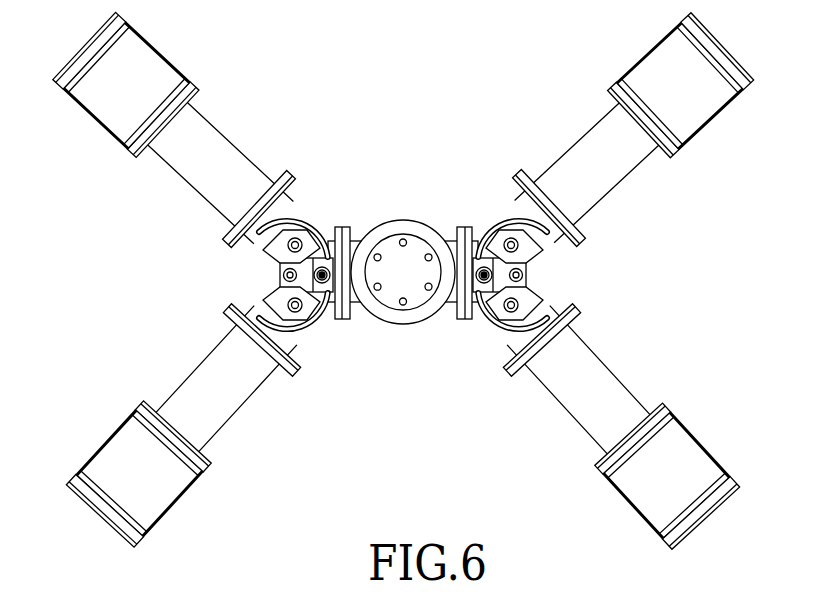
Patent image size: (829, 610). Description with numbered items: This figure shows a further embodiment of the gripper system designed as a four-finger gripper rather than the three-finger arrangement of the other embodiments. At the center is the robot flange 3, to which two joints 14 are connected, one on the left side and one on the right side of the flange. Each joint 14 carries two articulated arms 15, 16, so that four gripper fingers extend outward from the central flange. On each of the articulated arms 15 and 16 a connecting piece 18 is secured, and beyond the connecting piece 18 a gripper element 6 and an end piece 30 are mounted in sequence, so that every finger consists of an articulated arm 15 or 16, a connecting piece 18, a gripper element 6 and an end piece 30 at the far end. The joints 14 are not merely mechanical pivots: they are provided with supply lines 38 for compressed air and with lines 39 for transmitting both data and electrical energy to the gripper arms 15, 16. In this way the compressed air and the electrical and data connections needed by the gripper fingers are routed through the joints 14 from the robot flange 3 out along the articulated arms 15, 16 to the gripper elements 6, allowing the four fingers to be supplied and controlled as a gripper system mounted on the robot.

The robot flange 3 is at (400, 219).
The gripper element 6 is at (163, 72).
The joint 14 is at (331, 300).
The articulated arm 15 is at (288, 203).
The articulated arm 16 is at (250, 313).
The connecting piece 18 is at (225, 155).
The end piece 30 is at (65, 83).
The supply line 38 is at (315, 233).
The line 39 is at (272, 287).